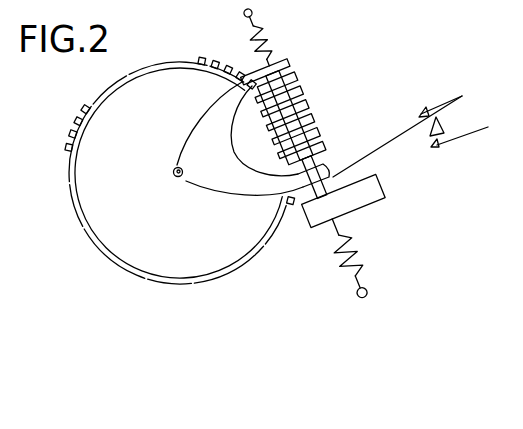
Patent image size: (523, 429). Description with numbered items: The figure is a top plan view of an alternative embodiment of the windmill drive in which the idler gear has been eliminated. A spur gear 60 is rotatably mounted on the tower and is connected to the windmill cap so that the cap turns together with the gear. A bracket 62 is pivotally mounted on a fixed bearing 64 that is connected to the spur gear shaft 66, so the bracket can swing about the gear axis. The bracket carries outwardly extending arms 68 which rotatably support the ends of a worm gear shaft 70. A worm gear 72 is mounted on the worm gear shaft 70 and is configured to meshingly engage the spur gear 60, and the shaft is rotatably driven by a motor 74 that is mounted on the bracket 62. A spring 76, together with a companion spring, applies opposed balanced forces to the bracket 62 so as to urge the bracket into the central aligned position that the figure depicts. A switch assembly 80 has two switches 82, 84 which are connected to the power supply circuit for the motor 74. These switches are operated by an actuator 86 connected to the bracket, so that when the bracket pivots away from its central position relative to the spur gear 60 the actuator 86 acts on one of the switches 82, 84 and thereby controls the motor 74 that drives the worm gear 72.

The spur gear 60 is at (102, 161).
The bracket 62 is at (184, 102).
The fixed bearing 64 is at (185, 187).
The spur gear shaft 66 is at (172, 176).
The outwardly extending arms 68 is at (247, 88).
The worm gear shaft 70 is at (286, 78).
The worm gear 72 is at (310, 118).
The motor 74 is at (386, 213).
The spring 76 is at (268, 40).
The switch assembly 80 is at (428, 125).
The switch 82 is at (428, 114).
The switch 84 is at (440, 148).
The actuator 86 is at (385, 145).